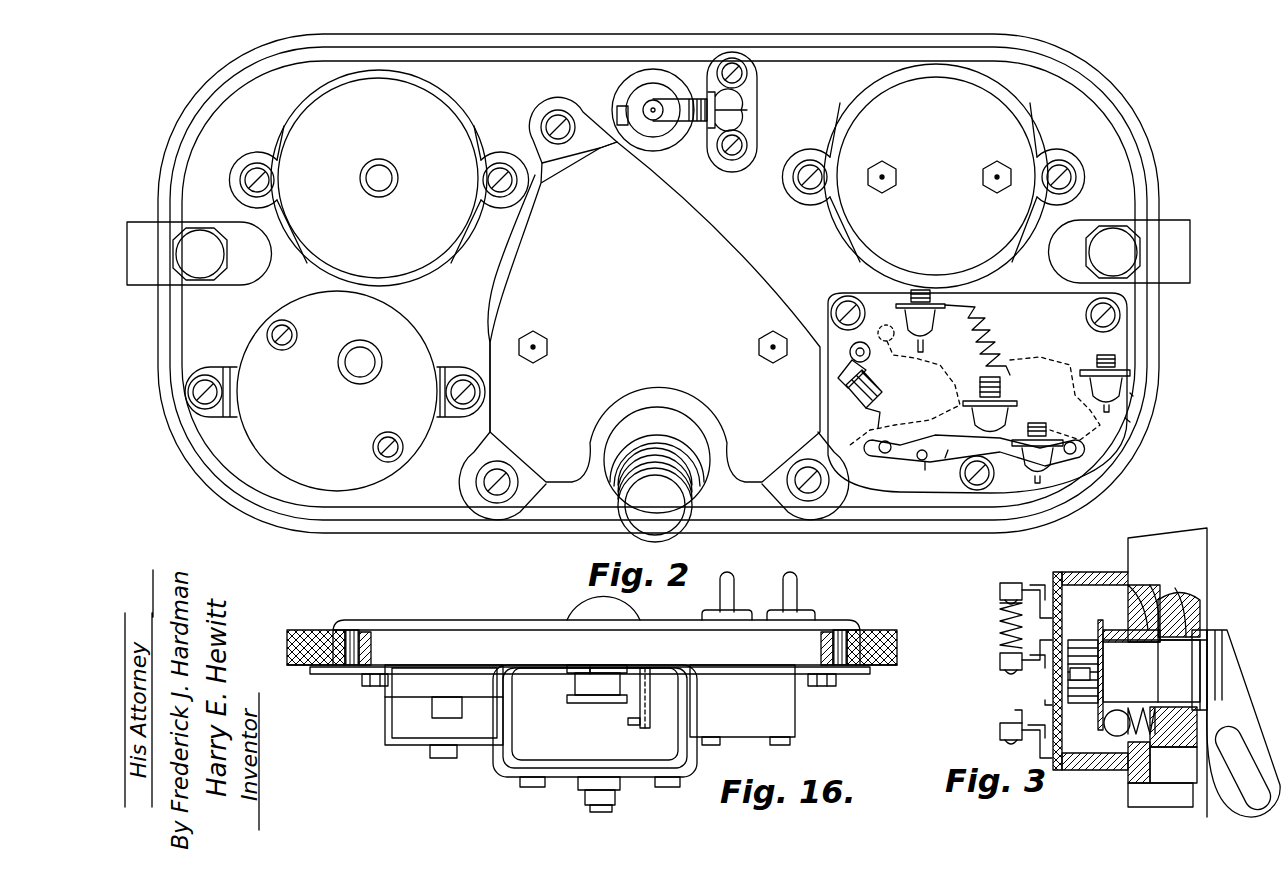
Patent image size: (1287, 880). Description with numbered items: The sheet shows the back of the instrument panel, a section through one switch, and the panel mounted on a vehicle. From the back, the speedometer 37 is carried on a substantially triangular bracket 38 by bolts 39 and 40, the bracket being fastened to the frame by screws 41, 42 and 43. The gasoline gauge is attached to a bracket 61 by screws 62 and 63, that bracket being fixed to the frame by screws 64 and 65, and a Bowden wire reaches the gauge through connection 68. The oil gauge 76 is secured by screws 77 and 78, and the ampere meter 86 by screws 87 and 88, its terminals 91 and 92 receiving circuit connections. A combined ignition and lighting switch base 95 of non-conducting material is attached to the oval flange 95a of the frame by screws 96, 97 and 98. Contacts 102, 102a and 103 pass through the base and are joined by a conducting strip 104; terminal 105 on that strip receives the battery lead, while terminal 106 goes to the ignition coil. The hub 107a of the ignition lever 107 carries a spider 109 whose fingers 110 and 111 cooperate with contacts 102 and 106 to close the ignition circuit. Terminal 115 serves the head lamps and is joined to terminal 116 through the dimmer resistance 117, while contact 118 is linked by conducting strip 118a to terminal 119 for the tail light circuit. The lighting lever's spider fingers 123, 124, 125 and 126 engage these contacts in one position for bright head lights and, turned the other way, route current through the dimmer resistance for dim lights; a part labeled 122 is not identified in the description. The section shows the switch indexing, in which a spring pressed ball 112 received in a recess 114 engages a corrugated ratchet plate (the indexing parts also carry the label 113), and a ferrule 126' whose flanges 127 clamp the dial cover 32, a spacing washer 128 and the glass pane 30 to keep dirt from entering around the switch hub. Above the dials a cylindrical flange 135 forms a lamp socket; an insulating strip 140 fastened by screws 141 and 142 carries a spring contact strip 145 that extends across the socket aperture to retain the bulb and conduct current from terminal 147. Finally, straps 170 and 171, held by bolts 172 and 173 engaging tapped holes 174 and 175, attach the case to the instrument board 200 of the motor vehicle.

In FIG. 3, the glass pane 30 is at (1203, 630).
In FIG. 3, the dial cover 32 is at (1197, 560).
In FIG. 2, the speedometer 37 is at (752, 197).
In FIG. 2, the bracket 38 is at (730, 277).
In FIG. 2, the bolt 39 is at (768, 343).
In FIG. 2, the bolt 40 is at (546, 347).
In FIG. 2, the screw 41 is at (828, 484).
In FIG. 2, the screw 42 is at (480, 484).
In FIG. 2, the screw 43 is at (552, 125).
In FIG. 2, the bracket 61 is at (268, 440).
In FIG. 2, the screw 62 is at (389, 432).
In FIG. 2, the screw 63 is at (283, 352).
In FIG. 2, the screw 64 is at (206, 376).
In FIG. 2, the screw 65 is at (464, 376).
In FIG. 2, the connection 68 is at (355, 372).
In FIG. 2, the oil gauge 76 is at (300, 145).
In FIG. 2, the screw 77 is at (500, 170).
In FIG. 2, the screw 78 is at (258, 172).
In FIG. 2, the ampere meter 86 is at (1010, 135).
In FIG. 2, the screw 87 is at (1074, 172).
In FIG. 2, the screw 88 is at (810, 160).
In FIG. 2, the terminal 91 is at (882, 170).
In FIG. 2, the terminal 92 is at (997, 170).
In FIG. 2, the switch base 95 is at (1135, 360).
In FIG. 3, the switch base 95 is at (1050, 682).
In FIG. 3, the oval flange 95a is at (1092, 570).
In FIG. 2, the screw 96 is at (1122, 312).
In FIG. 2, the screw 97 is at (845, 298).
In FIG. 2, the screw 98 is at (981, 490).
In FIG. 2, the contact 102 is at (1077, 447).
In FIG. 2, the contact 102a is at (925, 470).
In FIG. 2, the contact 103 is at (878, 447).
In FIG. 2, the conducting strip 104 is at (945, 458).
In FIG. 3, the conducting strip 104 is at (1047, 703).
In FIG. 2, the terminal 105 is at (1043, 462).
In FIG. 3, the terminal 105 is at (1048, 750).
In FIG. 2, the terminal 106 is at (1133, 395).
In FIG. 3, the ignition lever 107 is at (1262, 745).
In FIG. 3, the hub 107a is at (1140, 665).
In FIG. 2, the spider 109 is at (1080, 368).
In FIG. 2, the finger 110 is at (1130, 421).
In FIG. 3, the finger 110 is at (1076, 750).
In FIG. 3, the finger 111 is at (1100, 730).
In FIG. 3, the spring pressed ball 112 is at (1115, 736).
In FIG. 3, the spring 113 is at (1130, 736).
In FIG. 3, the recess 114 is at (1150, 790).
In FIG. 2, the terminal 115 is at (982, 380).
In FIG. 3, the terminal 115 is at (1050, 690).
In FIG. 2, the terminal 116 is at (931, 325).
In FIG. 3, the terminal 116 is at (1040, 592).
In FIG. 2, the dimmer resistance 117 is at (1002, 340).
In FIG. 3, the dimmer resistance 117 is at (998, 622).
In FIG. 2, the contact 118 is at (855, 348).
In FIG. 2, the conducting strip 118a is at (862, 382).
In FIG. 2, the terminal 119 is at (858, 396).
In FIG. 2, the hidden outline 122 is at (930, 368).
In FIG. 2, the finger 123 is at (885, 326).
In FIG. 2, the finger 124 is at (862, 424).
In FIG. 2, the finger 125 is at (918, 462).
In FIG. 2, the finger 126 is at (974, 450).
In FIG. 3, the ferrule 126' is at (1229, 649).
In FIG. 3, the flange 127 is at (1162, 600).
In FIG. 3, the spacing washer 128 is at (1195, 598).
In FIG. 2, the cylindrical flange 135 is at (625, 80).
In FIG. 2, the strip of insulating material 140 is at (757, 98).
In FIG. 2, the screw 141 is at (745, 75).
In FIG. 2, the screw 142 is at (746, 145).
In FIG. 2, the spring contact strip 145 is at (680, 115).
In FIG. 2, the terminal 147 is at (745, 110).
In FIG. 2, the strap 170 is at (1172, 228).
In FIG. 16, the strap 170 is at (865, 674).
In FIG. 2, the strap 171 is at (140, 228).
In FIG. 16, the strap 171 is at (345, 674).
In FIG. 2, the bolt 172 is at (1108, 250).
In FIG. 16, the bolt 172 is at (820, 688).
In FIG. 2, the bolt 173 is at (200, 252).
In FIG. 16, the bolt 173 is at (372, 688).
In FIG. 16, the tapped hole 174 is at (845, 640).
In FIG. 16, the tapped hole 175 is at (380, 640).
In FIG. 16, the instrument board 200 is at (294, 668).